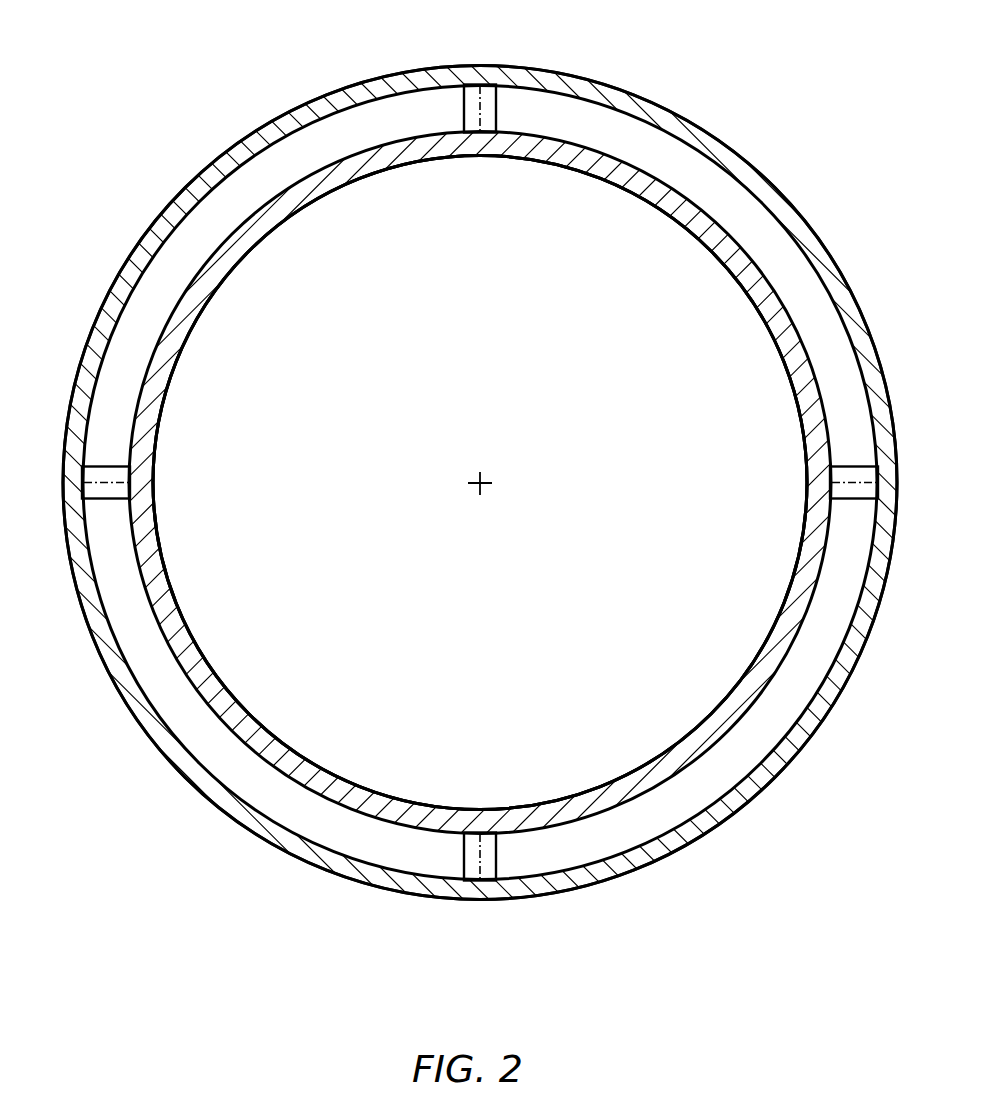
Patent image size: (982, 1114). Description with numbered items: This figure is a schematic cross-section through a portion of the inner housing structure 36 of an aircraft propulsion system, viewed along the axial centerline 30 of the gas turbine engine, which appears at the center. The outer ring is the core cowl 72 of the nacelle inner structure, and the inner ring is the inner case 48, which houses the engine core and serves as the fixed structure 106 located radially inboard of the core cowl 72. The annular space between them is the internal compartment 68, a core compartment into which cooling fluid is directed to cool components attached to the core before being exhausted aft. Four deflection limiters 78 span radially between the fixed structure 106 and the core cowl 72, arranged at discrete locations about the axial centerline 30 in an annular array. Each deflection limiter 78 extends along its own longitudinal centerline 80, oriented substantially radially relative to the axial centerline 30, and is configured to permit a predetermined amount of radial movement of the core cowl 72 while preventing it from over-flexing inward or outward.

The inner housing structure 36 is at (778, 116).
The core cowl 72 is at (832, 250).
The internal compartment 68 is at (638, 146).
The inner case 48 is at (763, 315).
The fixed structure 106 is at (763, 315).
The deflection limiter 78 is at (497, 103).
The longitudinal centerline 80 is at (480, 95).
The axial centerline 30 is at (482, 487).